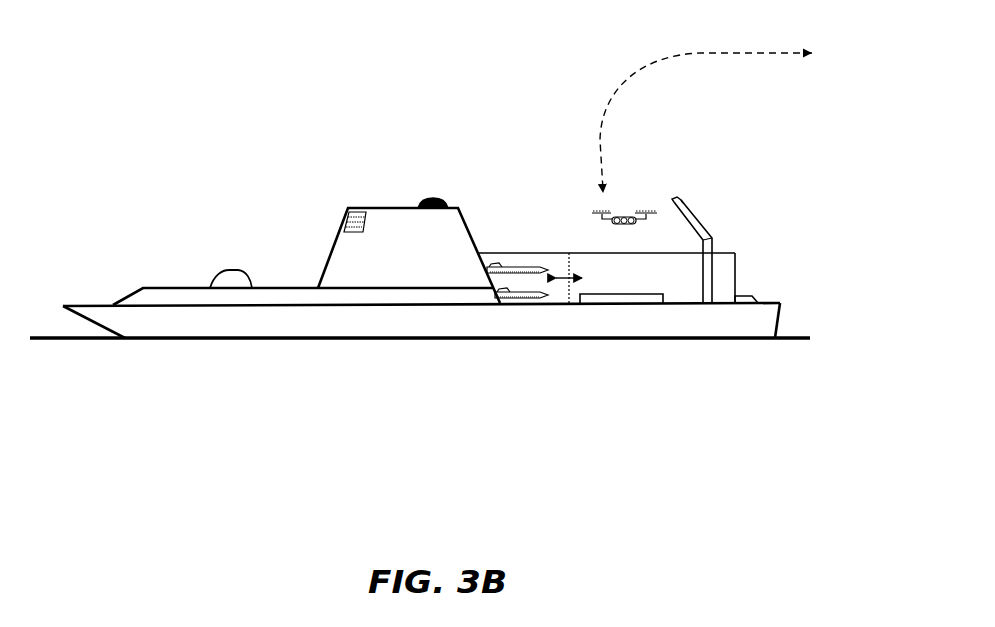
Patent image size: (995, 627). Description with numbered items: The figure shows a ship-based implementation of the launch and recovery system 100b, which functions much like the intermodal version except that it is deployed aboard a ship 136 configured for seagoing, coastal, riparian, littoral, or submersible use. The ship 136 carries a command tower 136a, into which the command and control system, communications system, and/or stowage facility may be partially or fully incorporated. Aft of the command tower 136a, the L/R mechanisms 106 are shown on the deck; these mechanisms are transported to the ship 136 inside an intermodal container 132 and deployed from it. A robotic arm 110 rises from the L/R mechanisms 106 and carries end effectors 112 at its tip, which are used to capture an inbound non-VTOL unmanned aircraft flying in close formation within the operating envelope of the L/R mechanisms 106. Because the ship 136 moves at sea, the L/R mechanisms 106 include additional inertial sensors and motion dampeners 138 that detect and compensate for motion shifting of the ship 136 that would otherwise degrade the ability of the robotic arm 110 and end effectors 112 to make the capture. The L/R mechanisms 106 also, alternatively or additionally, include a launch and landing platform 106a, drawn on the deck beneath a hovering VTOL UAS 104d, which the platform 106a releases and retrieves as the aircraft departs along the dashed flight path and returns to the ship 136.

The system 100b is at (96, 40).
The ship 136 is at (220, 327).
The command tower 136a is at (375, 207).
The L/R mechanisms 106 is at (690, 275).
The launch and landing platform 106a is at (618, 301).
The VTOL UAS 104d is at (617, 225).
The robotic arm 110 is at (701, 226).
The end effectors 112 is at (680, 196).
The intermodal container 132 is at (738, 278).
The inertial sensors and motion dampeners 138 is at (758, 300).